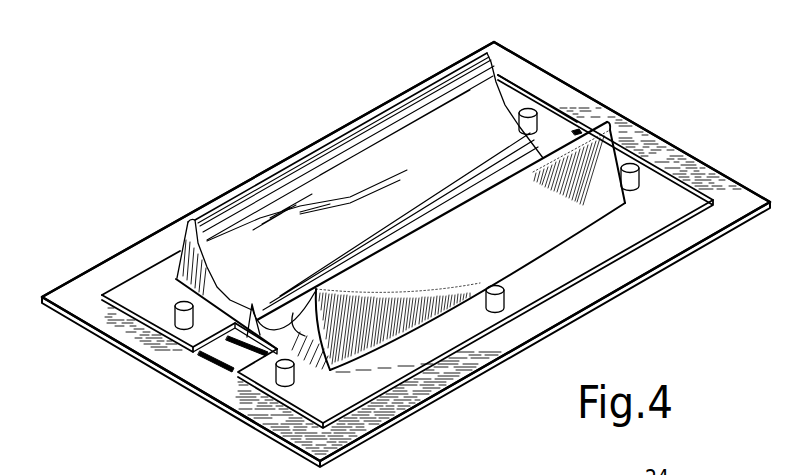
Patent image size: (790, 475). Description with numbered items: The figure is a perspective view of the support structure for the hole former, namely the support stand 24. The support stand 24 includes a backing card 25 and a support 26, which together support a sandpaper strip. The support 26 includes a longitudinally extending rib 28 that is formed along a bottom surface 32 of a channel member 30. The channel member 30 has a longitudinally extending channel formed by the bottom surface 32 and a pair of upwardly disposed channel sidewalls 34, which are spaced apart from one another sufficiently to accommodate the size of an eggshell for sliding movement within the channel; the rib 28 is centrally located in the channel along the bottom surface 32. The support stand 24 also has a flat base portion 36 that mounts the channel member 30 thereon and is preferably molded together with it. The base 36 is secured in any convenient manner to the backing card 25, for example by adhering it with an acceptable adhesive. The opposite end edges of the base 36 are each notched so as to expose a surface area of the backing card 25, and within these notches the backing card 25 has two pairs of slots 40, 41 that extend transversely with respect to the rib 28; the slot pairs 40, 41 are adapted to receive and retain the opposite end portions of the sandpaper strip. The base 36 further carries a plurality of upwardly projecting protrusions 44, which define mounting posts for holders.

The support stand 24 is at (213, 178).
The backing card 25 is at (700, 180).
The support 26 is at (318, 150).
The longitudinally extending rib 28 is at (453, 193).
The channel member 30 is at (509, 68).
The bottom surface 32 is at (240, 308).
The channel sidewalls 34 is at (365, 162).
The flat base portion 36 is at (433, 337).
The slots 40 is at (577, 130).
The slots 41 is at (253, 306).
The upwardly projecting protrusions 44 is at (530, 111).